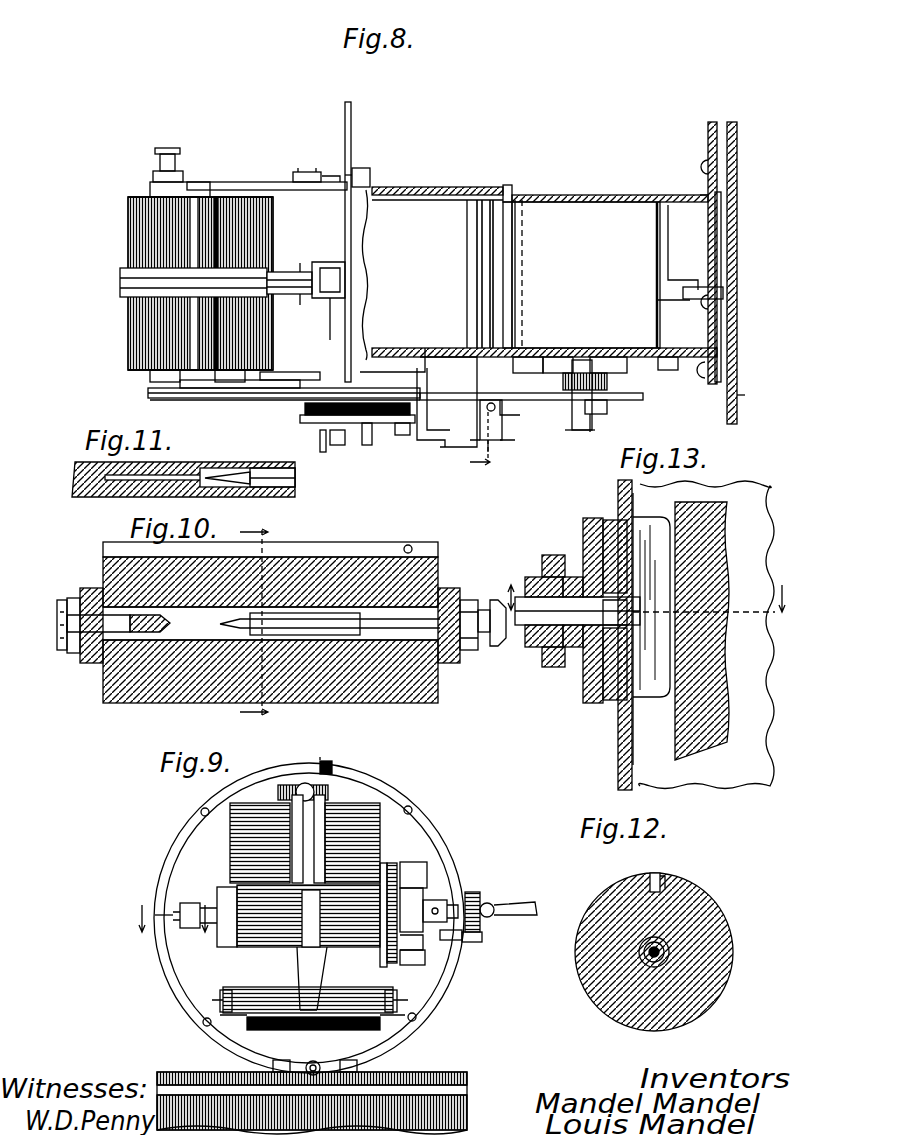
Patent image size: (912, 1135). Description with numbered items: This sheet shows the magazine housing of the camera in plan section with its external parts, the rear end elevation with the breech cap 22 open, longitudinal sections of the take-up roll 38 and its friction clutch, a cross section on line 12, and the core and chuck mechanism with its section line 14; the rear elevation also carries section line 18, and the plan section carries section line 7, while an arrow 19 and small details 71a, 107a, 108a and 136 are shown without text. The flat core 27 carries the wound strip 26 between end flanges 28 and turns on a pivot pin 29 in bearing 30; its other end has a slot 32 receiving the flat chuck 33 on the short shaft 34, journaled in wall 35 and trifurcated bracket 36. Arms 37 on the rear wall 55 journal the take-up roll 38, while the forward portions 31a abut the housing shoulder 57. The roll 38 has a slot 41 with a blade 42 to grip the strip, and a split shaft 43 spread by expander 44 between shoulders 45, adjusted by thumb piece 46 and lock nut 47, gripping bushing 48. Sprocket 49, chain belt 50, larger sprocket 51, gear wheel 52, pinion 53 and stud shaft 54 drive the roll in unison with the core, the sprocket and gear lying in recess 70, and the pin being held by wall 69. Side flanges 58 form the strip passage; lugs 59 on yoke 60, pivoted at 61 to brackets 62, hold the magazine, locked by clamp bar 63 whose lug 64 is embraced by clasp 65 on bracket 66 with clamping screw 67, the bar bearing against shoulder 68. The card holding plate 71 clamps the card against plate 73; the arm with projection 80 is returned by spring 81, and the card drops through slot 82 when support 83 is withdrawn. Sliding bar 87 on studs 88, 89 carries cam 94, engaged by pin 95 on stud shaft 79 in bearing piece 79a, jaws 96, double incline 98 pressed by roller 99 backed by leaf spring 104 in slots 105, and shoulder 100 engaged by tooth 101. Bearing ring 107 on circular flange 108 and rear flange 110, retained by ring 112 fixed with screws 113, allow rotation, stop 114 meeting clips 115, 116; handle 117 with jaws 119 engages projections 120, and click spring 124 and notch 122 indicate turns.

In FIG. 8, the section line 7— 7 is at (482, 473).
In FIG. 10, the section line 12— 12 is at (255, 619).
In FIG. 13, the section line 14— 14 is at (720, 603).
In FIG. 9, the section line 18— 18 is at (172, 927).
In FIG. 13, the section line 19 is at (509, 588).
In FIG. 9, the breech cap 22 is at (467, 1100).
In FIG. 8, the continuous strip of paper 26 is at (135, 237).
In FIG. 9, the continuous strip of paper 26 is at (328, 1030).
In FIG. 13, the flat core 27 is at (715, 545).
In FIG. 8, the flanges 28 is at (420, 196).
In FIG. 8, the pivot pin 29 is at (362, 168).
In FIG. 8, the bearing 30 is at (430, 188).
In FIG. 8, the forwardly extending portions 31a is at (480, 200).
In FIG. 13, the slot 32 is at (618, 755).
In FIG. 13, the flat chuck 33 is at (665, 670).
In FIG. 13, the short shaft 34 is at (573, 650).
In FIG. 13, the opposite wall of the magazine 35 is at (632, 735).
In FIG. 8, the trifurcated bracket 36 is at (280, 375).
In FIG. 13, the trifurcated bracket 36 is at (535, 577).
In FIG. 8, the arms or brackets 37 is at (170, 190).
In FIG. 10, the arms or brackets 37 is at (88, 588).
In FIG. 8, the take-up roll 38 is at (140, 194).
In FIG. 10, the take-up roll 38 is at (145, 700).
In FIG. 12, the take-up roll 38 is at (715, 912).
In FIG. 10, the longitudinal slot 41 is at (420, 545).
In FIG. 12, the longitudinal slot 41 is at (650, 878).
In FIG. 10, the blade 42 is at (365, 545).
In FIG. 12, the blade 42 is at (663, 876).
In FIG. 11, the split shaft 43 is at (95, 497).
In FIG. 10, the split shaft 43 is at (100, 630).
In FIG. 12, the split shaft 43 is at (645, 952).
In FIG. 11, the expander 44 is at (300, 462).
In FIG. 10, the expander 44 is at (290, 640).
In FIG. 12, the expander 44 is at (640, 960).
In FIG. 11, the shoulders 45 is at (232, 470).
In FIG. 10, the shoulders 45 is at (260, 620).
In FIG. 8, the thumb piece 46 is at (170, 148).
In FIG. 10, the thumb piece 46 is at (495, 646).
In FIG. 13, the thumb piece 46 is at (577, 611).
In FIG. 10, the lock nut 47 is at (468, 650).
In FIG. 10, the bushing 48 is at (215, 645).
In FIG. 12, the bushing 48 is at (668, 955).
In FIG. 10, the sprocket wheel 49 is at (58, 630).
In FIG. 8, the chain belt 50 is at (250, 398).
In FIG. 9, the chain belt 50 is at (425, 962).
In FIG. 8, the larger sprocket wheel 51 is at (400, 350).
In FIG. 13, the larger sprocket wheel 51 is at (595, 690).
In FIG. 8, the gear wheel 52 is at (405, 437).
In FIG. 13, the gear wheel 52 is at (560, 655).
In FIG. 8, the pinion 53 is at (310, 418).
In FIG. 9, the stud shaft 54 is at (462, 935).
In FIG. 8, the rear wall of the magazine 55 is at (245, 235).
In FIG. 9, the rear wall of the magazine 55 is at (245, 838).
In FIG. 8, the shoulder 57 is at (507, 195).
In FIG. 9, the side flanges 58 is at (220, 1060).
In FIG. 9, the lugs 59 is at (235, 987).
In FIG. 8, the yoke 60 is at (260, 182).
In FIG. 9, the yoke 60 is at (240, 1018).
In FIG. 8, the pivot 61 is at (302, 172).
In FIG. 9, the pivot 61 is at (220, 1005).
In FIG. 8, the brackets 62 is at (335, 176).
In FIG. 8, the clamp bar 63 is at (180, 285).
In FIG. 9, the clamp bar 63 is at (303, 850).
In FIG. 8, the lug 64 is at (318, 262).
In FIG. 8, the clasp 65 is at (300, 305).
In FIG. 9, the clasp 65 is at (330, 795).
In FIG. 8, the bracket 66 is at (330, 268).
In FIG. 8, the clamping screw 67 is at (280, 295).
In FIG. 9, the clamping screw 67 is at (312, 788).
In FIG. 8, the shoulder 68 is at (330, 336).
In FIG. 8, the outer wall of the recess 69 is at (372, 176).
In FIG. 9, the outer wall of the recess 69 is at (235, 874).
In FIG. 8, the recess 70 is at (430, 395).
In FIG. 9, the recess 70 is at (385, 863).
In FIG. 8, the card holding plate 71 is at (605, 215).
In FIG. 8, the bracket 71a is at (676, 270).
In FIG. 8, the plate 73 is at (722, 238).
In FIG. 8, the stud shaft 79 is at (585, 432).
In FIG. 8, the bearing piece 79a is at (565, 357).
In FIG. 8, the projection 80 is at (607, 383).
In FIG. 8, the spring 81 is at (665, 357).
In FIG. 8, the slot 82 is at (712, 230).
In FIG. 8, the automatic support 83 is at (700, 293).
In FIG. 8, the sliding bar 87 is at (530, 357).
In FIG. 8, the stud or screw 88 is at (370, 445).
In FIG. 8, the stud or screw 89 is at (520, 415).
In FIG. 8, the cam 94 is at (615, 350).
In FIG. 8, the pin 95 is at (605, 408).
In FIG. 9, the jaws 96 is at (425, 895).
In FIG. 8, the double incline 98 is at (500, 420).
In FIG. 8, the spring-pressed roller 99 is at (486, 435).
In FIG. 8, the shoulder 100 is at (645, 397).
In FIG. 8, the tooth 101 is at (595, 425).
In FIG. 8, the leaf spring 104 is at (492, 445).
In FIG. 8, the slots 105 is at (505, 440).
In FIG. 8, the bearing ring 107 is at (737, 145).
In FIG. 8, the wall 107a is at (737, 420).
In FIG. 8, the circular flange 108 is at (708, 150).
In FIG. 8, the bolt 108a is at (712, 385).
In FIG. 8, the surrounding flange 110 is at (348, 102).
In FIG. 9, the surrounding flange 110 is at (405, 835).
In FIG. 9, the ring 112 is at (452, 870).
In FIG. 9, the screws 113 is at (200, 810).
In FIG. 9, the stop 114 is at (200, 898).
In FIG. 9, the clip 115 is at (155, 915).
In FIG. 9, the clip 116 is at (325, 761).
In FIG. 9, the key or handle 117 is at (500, 915).
In FIG. 9, the jaws 119 is at (447, 902).
In FIG. 8, the flattened projections 120 is at (323, 452).
In FIG. 9, the flattened projections 120 is at (480, 905).
In FIG. 9, the notch 122 is at (320, 902).
In FIG. 9, the click spring 124 is at (482, 937).
In FIG. 9, the block 136 is at (416, 875).